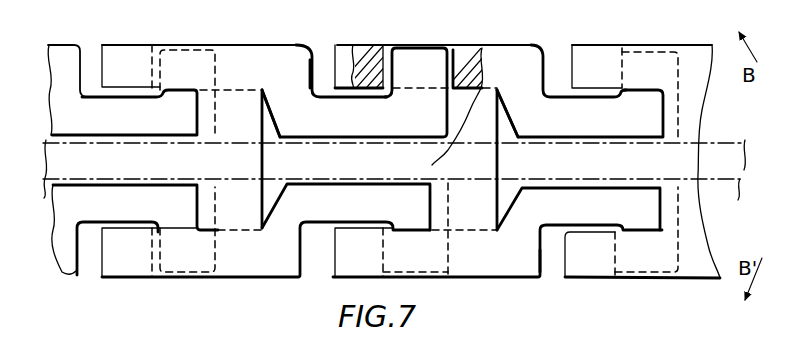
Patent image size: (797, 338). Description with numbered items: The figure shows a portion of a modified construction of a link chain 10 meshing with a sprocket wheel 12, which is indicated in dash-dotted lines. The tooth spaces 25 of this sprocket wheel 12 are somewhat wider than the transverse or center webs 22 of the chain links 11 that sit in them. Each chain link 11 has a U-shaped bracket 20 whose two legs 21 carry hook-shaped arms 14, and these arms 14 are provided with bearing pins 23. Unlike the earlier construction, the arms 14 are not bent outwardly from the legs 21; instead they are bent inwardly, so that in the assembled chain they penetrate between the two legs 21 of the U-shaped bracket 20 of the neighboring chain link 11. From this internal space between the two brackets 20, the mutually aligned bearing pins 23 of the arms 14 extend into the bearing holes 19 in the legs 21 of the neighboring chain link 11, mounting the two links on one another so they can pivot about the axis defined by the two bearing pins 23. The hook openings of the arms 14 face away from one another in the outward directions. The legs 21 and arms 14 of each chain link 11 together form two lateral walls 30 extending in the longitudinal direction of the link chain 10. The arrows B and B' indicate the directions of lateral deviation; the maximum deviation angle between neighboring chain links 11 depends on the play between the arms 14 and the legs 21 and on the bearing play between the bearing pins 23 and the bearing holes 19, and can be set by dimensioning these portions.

The link chain 10 is at (554, 43).
The chain link 11 is at (64, 41).
The sprocket wheel 12 is at (386, 182).
The arms 14 is at (347, 127).
The bearing holes 19 is at (390, 63).
The U-shaped bracket 20 is at (458, 190).
The legs 21 is at (343, 62).
The center webs 22 is at (256, 101).
The bearing pins 23 is at (440, 80).
The tooth spaces 25 is at (200, 147).
The lateral walls 30 is at (303, 43).